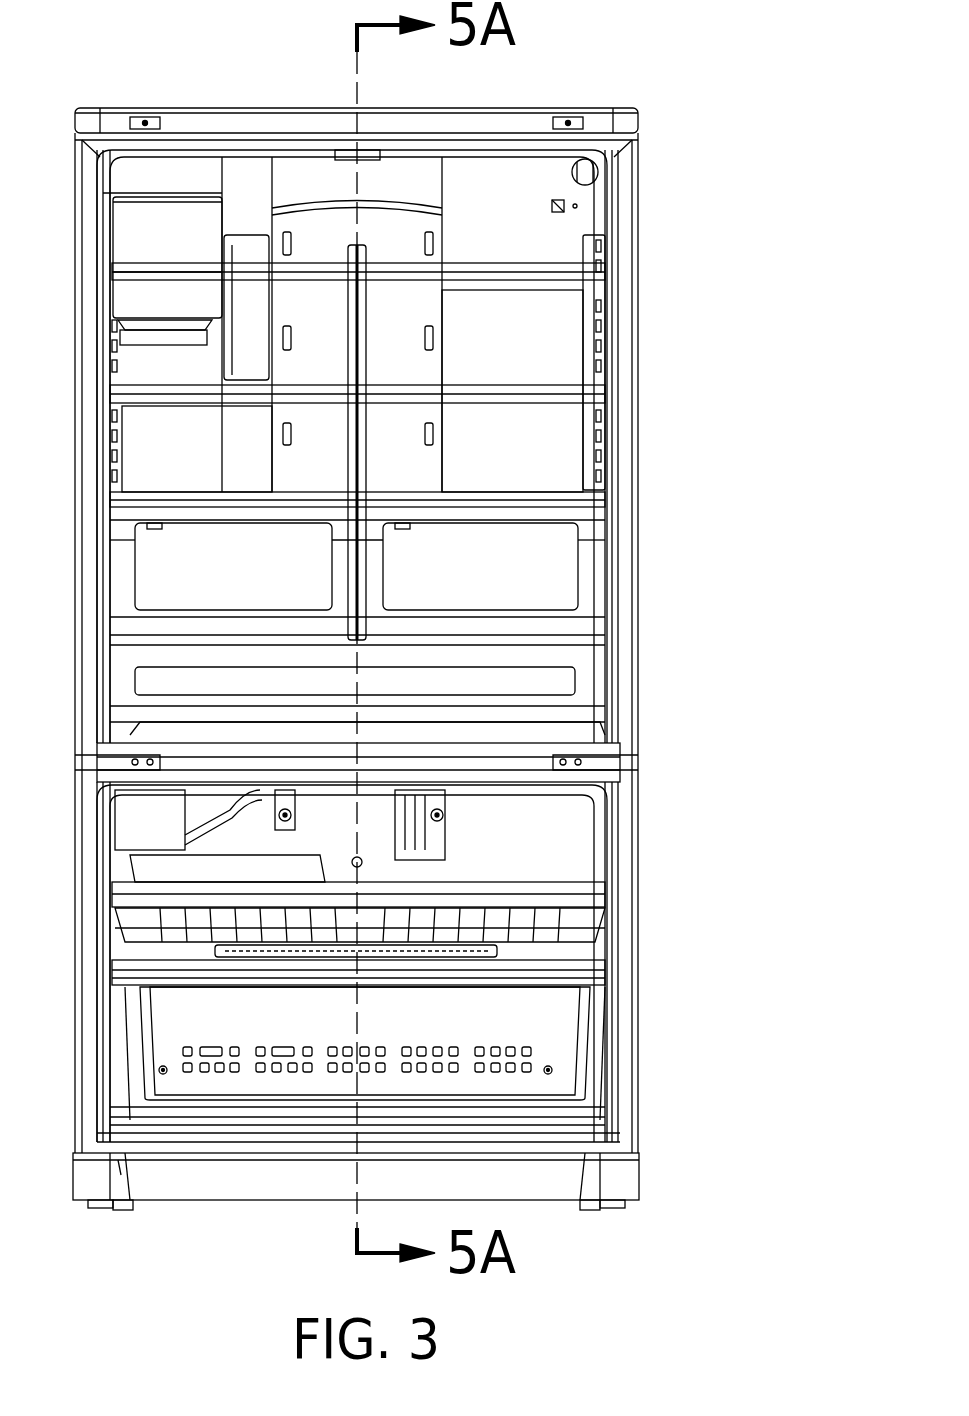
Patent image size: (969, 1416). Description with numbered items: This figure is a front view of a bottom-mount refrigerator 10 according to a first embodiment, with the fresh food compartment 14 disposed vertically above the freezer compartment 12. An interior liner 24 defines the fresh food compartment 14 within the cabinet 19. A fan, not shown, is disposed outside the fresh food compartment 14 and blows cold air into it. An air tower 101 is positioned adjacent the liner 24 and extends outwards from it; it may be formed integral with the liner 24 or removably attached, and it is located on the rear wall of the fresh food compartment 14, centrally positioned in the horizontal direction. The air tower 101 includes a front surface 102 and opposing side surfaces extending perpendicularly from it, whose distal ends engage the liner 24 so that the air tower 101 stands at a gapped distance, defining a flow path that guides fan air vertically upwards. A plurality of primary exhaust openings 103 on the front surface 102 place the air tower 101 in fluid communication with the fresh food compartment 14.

The refrigerator 10 is at (650, 77).
The freezer compartment 12 is at (560, 1028).
The fresh food compartment 14 is at (575, 460).
The cabinet 19 is at (640, 232).
The interior liner 24 is at (527, 354).
The air tower 101 is at (285, 472).
The front surface 102 is at (331, 379).
The primary exhaust openings 103 is at (282, 242).